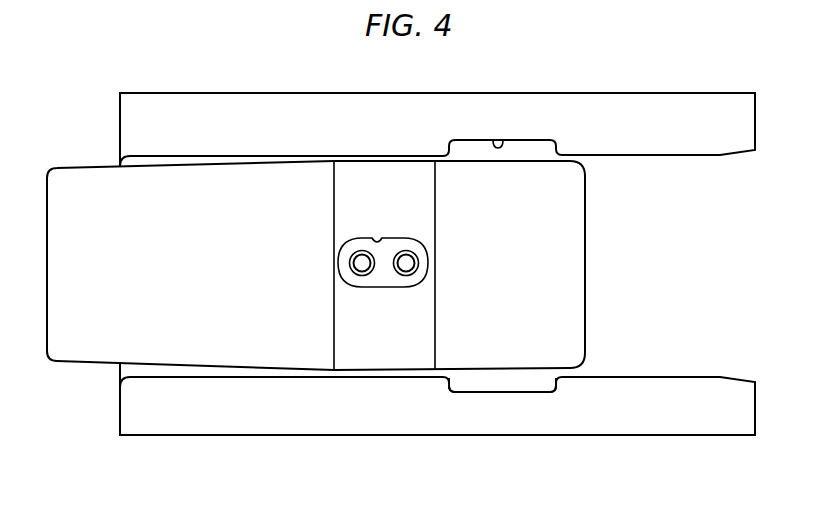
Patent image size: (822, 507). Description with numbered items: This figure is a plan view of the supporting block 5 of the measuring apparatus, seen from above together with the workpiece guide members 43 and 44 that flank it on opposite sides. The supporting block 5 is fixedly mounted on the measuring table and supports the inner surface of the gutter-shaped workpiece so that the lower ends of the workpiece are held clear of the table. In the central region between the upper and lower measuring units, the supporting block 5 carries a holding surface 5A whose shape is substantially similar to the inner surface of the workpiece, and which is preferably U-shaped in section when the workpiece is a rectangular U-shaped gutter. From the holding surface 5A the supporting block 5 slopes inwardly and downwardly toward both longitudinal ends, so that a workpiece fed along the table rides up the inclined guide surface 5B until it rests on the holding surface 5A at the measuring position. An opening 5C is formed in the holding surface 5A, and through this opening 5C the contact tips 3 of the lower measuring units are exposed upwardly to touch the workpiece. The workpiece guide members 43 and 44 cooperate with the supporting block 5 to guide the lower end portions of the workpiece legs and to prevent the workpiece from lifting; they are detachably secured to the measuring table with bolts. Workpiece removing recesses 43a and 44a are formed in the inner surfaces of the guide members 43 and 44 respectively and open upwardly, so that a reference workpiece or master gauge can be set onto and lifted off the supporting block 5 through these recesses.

The contact tips 3 is at (362, 275).
The supporting block 5 is at (515, 183).
The holding surface 5A is at (370, 168).
The inclined guide surface 5B is at (462, 170).
The opening 5C is at (377, 240).
The workpiece guide member 43 is at (672, 90).
The workpiece removing recess 43a is at (498, 147).
The workpiece guide member 44 is at (627, 423).
The workpiece removing recess 44a is at (510, 382).